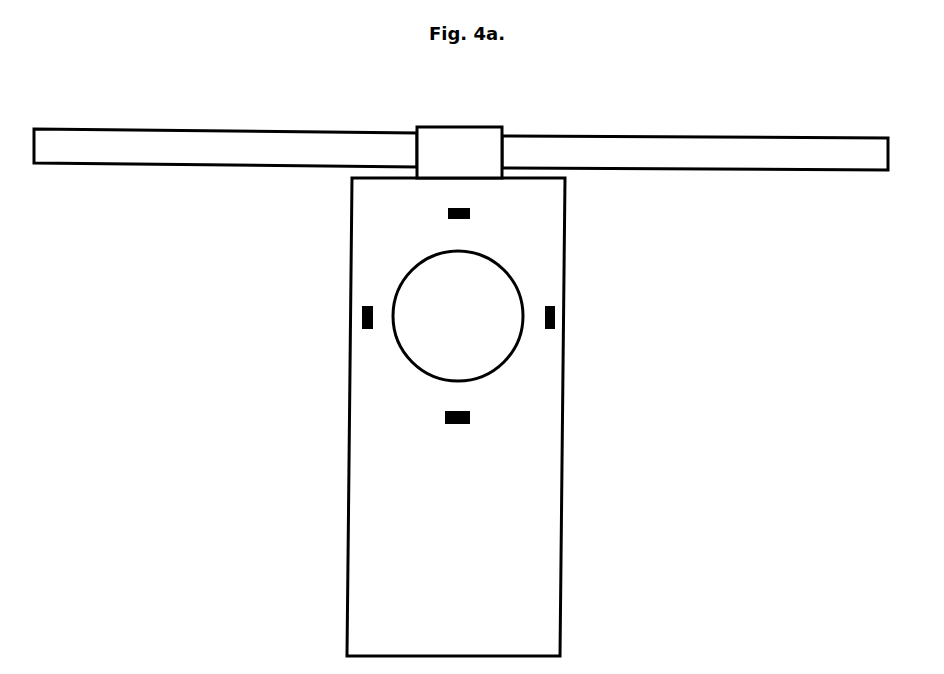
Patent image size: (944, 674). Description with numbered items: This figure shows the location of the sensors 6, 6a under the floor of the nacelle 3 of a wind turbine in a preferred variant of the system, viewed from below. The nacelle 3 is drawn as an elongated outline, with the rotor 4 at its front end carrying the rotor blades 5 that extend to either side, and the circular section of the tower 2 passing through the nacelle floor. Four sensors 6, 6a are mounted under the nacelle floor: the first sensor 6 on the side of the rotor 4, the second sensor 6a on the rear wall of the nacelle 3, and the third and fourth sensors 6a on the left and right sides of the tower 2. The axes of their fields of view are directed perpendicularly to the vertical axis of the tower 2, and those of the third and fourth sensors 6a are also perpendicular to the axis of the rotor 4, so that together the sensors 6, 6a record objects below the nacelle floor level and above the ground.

The tower 2 is at (458, 316).
The nacelle 3 is at (456, 417).
The rotor 4 is at (459, 130).
The rotor blades 5 is at (461, 149).
The sensor 6 is at (480, 205).
The sensor 6a is at (444, 355).